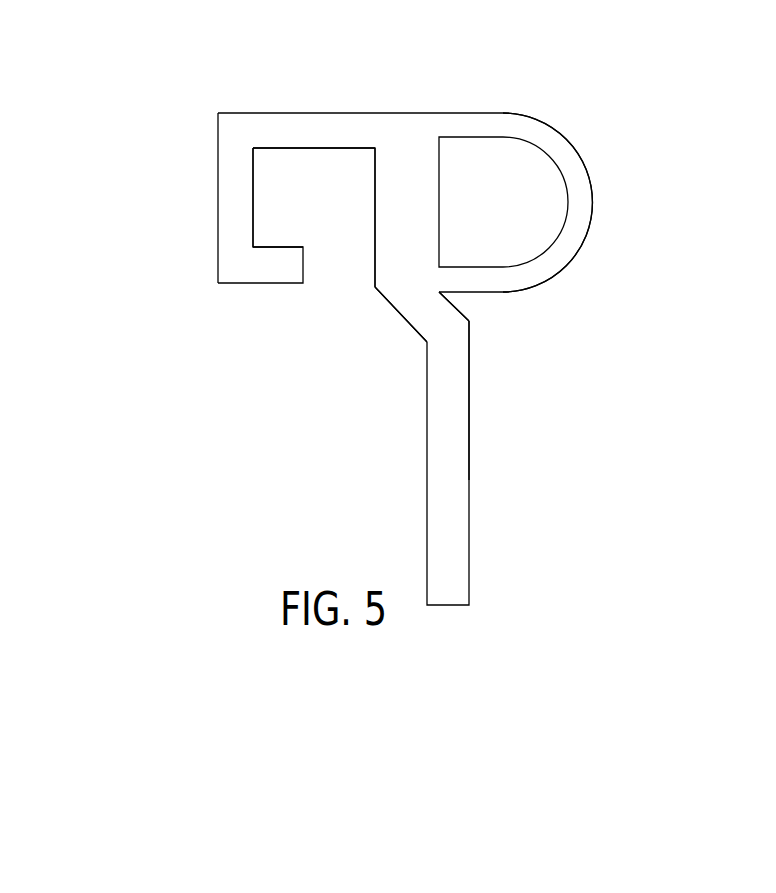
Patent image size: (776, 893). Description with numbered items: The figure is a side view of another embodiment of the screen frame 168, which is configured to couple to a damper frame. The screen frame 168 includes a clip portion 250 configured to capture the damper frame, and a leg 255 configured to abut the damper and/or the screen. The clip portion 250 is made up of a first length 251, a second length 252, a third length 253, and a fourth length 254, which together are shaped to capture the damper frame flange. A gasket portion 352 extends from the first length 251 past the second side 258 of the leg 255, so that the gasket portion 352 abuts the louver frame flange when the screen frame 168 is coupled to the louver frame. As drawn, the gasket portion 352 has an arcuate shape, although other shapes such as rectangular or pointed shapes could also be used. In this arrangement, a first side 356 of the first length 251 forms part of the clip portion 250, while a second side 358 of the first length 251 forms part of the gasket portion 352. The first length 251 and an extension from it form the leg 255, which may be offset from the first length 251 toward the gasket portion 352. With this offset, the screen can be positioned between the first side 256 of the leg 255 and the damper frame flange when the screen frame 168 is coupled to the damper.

The clip portion 250 is at (411, 321).
The first length 251 is at (405, 173).
The second length 252 is at (323, 128).
The third length 253 is at (227, 199).
The fourth length 254 is at (280, 265).
The leg 255 is at (447, 548).
The first side of the leg 256 is at (383, 415).
The second side of the leg 258 is at (553, 403).
The gasket portion 352 is at (544, 164).
The screen frame 168 is at (637, 180).
The first side of the first length 356 is at (347, 232).
The second side of the first length 358 is at (470, 245).